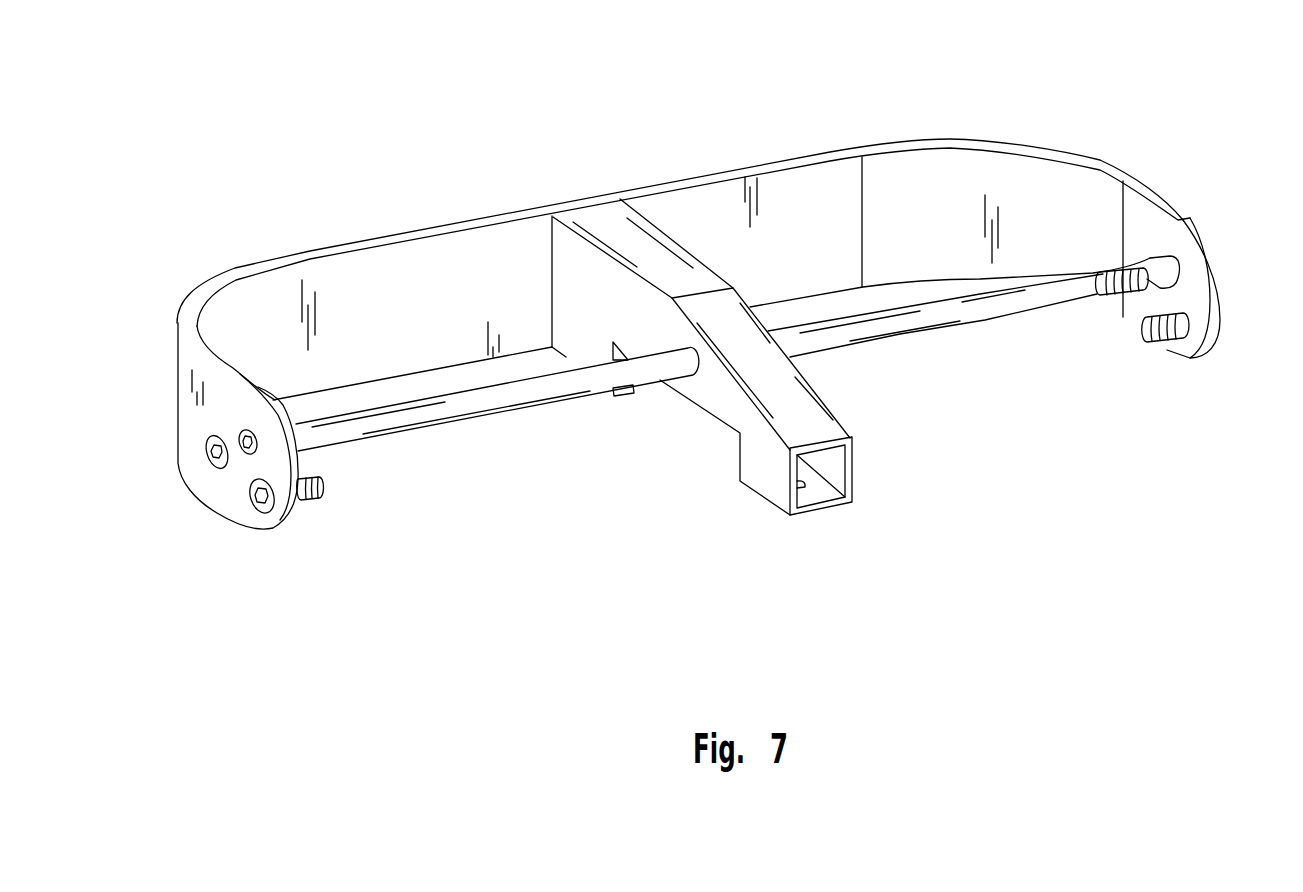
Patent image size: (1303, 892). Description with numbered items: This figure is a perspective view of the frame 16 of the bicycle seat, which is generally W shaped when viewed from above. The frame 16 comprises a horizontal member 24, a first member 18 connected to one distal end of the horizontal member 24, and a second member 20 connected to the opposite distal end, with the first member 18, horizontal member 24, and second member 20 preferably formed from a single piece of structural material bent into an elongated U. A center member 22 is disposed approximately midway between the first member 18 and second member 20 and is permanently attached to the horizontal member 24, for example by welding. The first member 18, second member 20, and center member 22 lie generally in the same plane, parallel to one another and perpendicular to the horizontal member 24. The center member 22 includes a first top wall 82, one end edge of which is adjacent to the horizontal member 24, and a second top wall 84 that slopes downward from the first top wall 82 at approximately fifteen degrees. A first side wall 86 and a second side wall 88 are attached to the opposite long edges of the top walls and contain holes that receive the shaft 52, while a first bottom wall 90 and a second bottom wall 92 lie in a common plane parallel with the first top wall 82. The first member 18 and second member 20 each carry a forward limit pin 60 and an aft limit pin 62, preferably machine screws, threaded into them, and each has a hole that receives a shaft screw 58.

The frame 16 is at (440, 178).
The first member 18 is at (1168, 198).
The second member 20 is at (188, 424).
The center member 22 is at (828, 363).
The horizontal member 24 is at (646, 186).
The shaft 52 is at (500, 398).
The shaft screw 58 is at (246, 452).
The forward limit pin 60 is at (323, 490).
The aft limit pin 62 is at (211, 458).
The first top wall 82 is at (607, 222).
The second top wall 84 is at (797, 398).
The first side wall 86 is at (853, 473).
The second side wall 88 is at (760, 459).
The first bottom wall 90 is at (810, 516).
The second bottom wall 92 is at (627, 394).